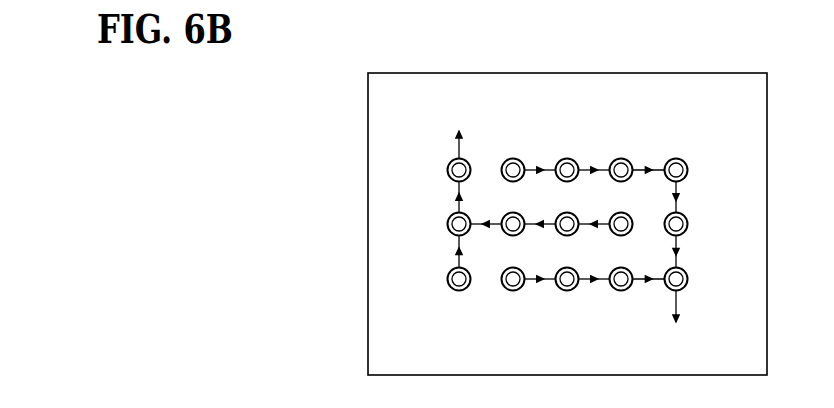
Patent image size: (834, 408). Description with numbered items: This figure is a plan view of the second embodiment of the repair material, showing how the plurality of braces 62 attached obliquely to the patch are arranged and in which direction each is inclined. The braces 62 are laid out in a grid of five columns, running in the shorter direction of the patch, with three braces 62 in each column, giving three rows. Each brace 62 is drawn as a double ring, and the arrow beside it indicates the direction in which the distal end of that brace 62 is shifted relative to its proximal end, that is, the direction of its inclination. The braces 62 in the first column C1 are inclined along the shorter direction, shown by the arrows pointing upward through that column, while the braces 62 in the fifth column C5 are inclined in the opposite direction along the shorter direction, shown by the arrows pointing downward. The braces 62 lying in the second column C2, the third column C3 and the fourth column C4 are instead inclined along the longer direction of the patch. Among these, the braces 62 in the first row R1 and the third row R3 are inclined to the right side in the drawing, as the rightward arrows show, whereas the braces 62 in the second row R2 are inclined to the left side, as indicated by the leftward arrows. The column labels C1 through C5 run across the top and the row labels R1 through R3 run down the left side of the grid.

The brace 62 is at (567, 217).
The first column C1 is at (459, 189).
The second column C2 is at (513, 189).
The third column C3 is at (567, 189).
The fourth column C4 is at (621, 189).
The fifth column C5 is at (676, 205).
The first row R1 is at (499, 172).
The second row R2 is at (471, 226).
The third row R3 is at (499, 281).